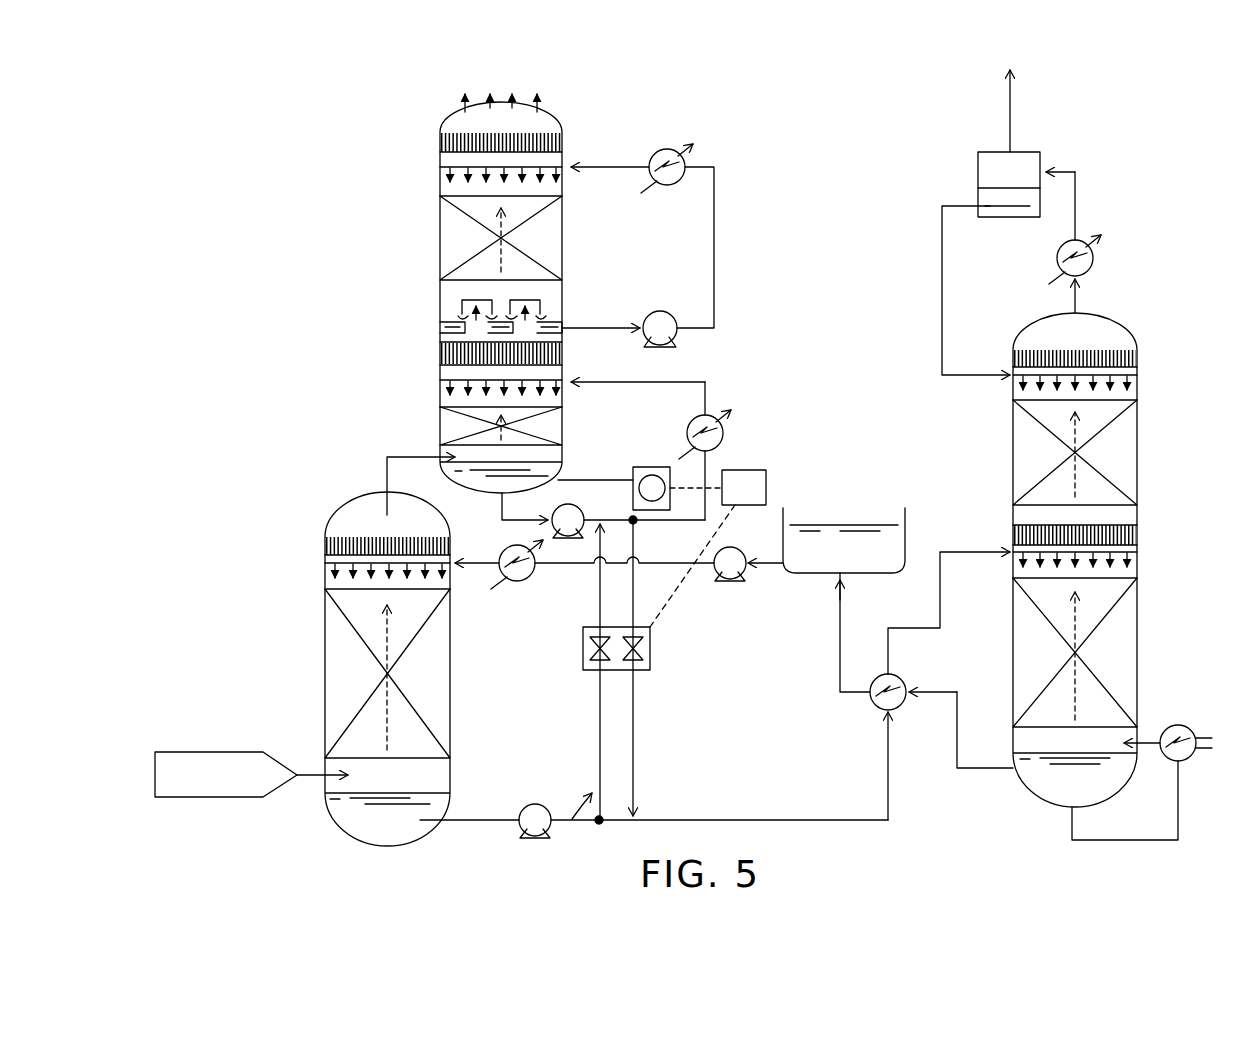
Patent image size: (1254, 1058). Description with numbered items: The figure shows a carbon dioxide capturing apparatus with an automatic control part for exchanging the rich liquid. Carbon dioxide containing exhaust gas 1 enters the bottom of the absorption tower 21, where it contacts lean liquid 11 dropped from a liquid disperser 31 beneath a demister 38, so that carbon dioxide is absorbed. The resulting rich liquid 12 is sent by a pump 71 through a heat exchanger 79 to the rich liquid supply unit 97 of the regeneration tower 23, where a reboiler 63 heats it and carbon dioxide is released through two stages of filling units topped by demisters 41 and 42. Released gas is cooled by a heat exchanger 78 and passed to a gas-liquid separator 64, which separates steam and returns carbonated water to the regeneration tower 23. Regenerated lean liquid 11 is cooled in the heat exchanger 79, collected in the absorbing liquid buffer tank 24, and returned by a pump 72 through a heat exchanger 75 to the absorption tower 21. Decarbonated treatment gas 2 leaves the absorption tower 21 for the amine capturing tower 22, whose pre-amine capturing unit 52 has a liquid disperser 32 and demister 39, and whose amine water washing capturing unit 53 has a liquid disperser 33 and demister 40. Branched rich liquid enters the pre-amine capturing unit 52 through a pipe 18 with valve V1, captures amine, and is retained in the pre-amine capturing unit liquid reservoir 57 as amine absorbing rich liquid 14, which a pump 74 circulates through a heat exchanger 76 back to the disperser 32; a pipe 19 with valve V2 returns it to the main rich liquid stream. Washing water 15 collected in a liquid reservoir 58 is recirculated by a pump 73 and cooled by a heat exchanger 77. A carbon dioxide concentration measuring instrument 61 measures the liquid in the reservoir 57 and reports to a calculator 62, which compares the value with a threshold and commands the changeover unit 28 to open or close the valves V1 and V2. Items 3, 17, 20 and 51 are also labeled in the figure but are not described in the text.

The carbon dioxide containing exhaust gas 1 is at (212, 752).
The decarbonated treatment gas 2 is at (387, 468).
The exhaust gas outlet 3 is at (462, 100).
The lean liquid 11 is at (480, 565).
The rich liquid 12 is at (500, 818).
The amine absorbing rich liquid 14 is at (500, 518).
The washing water 15 is at (714, 250).
The circulation line 17 is at (706, 392).
The pipe 18 is at (598, 695).
The pipe 19 is at (635, 695).
The product gas outlet 20 is at (1008, 97).
The absorption tower 21 is at (315, 603).
The amine capturing tower 22 is at (420, 193).
The regeneration tower 23 is at (1145, 432).
The absorbing liquid buffer tank 24 is at (800, 578).
The changeover unit 28 is at (583, 645).
The liquid disperser 31 is at (325, 566).
The liquid disperser 32 is at (440, 383).
The liquid disperser 33 is at (440, 170).
The demister 38 is at (325, 538).
The demister 39 is at (440, 352).
The demister 40 is at (440, 140).
The demister 41 is at (1013, 540).
The demister 42 is at (1137, 358).
The packed bed 51 is at (325, 672).
The pre-amine capturing unit 52 is at (440, 428).
The amine water washing capturing unit 53 is at (440, 247).
The pre-amine capturing unit liquid reservoir 57 is at (560, 470).
The liquid reservoir 58 is at (440, 325).
The carbon dioxide concentration measuring instrument 61 is at (652, 467).
The calculator 62 is at (742, 470).
The reboiler 63 is at (1192, 758).
The gas-liquid separator 64 is at (962, 173).
The pump 71 is at (545, 806).
The pump 72 is at (724, 584).
The pump 73 is at (660, 311).
The pump 74 is at (575, 508).
The heat exchanger 75 is at (530, 578).
The heat exchanger 76 is at (692, 418).
The heat exchanger 77 is at (655, 152).
The heat exchanger 78 is at (1093, 268).
The heat exchanger 79 is at (898, 712).
The rich liquid supply unit 97 is at (1137, 567).
The valve V1 is at (590, 662).
The valve V2 is at (648, 651).